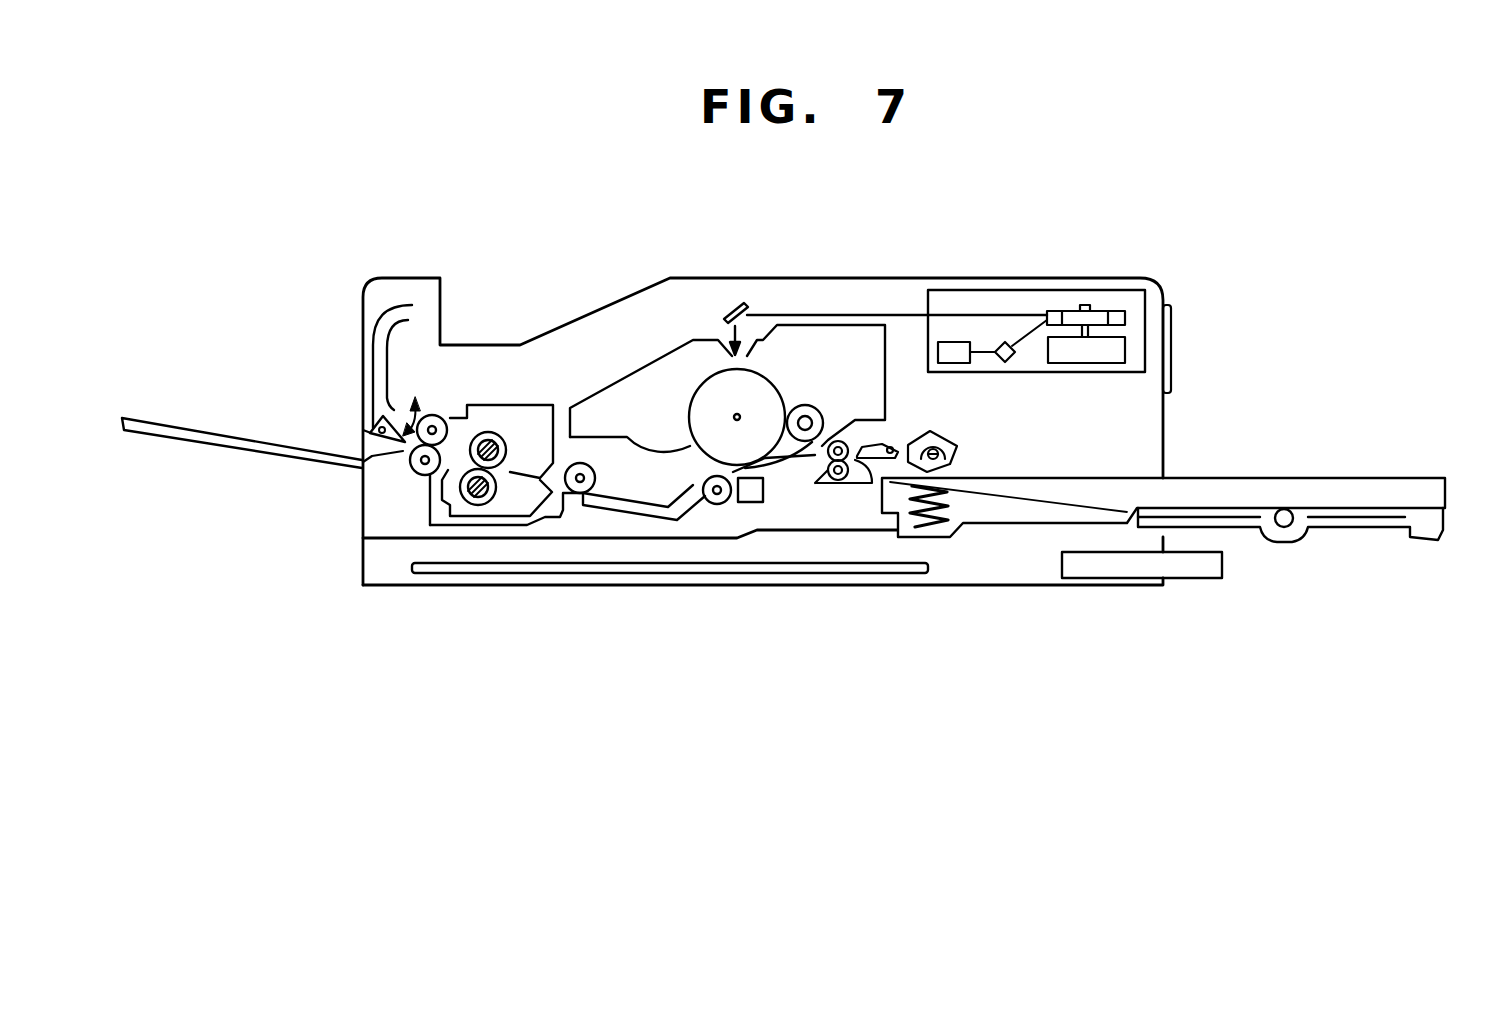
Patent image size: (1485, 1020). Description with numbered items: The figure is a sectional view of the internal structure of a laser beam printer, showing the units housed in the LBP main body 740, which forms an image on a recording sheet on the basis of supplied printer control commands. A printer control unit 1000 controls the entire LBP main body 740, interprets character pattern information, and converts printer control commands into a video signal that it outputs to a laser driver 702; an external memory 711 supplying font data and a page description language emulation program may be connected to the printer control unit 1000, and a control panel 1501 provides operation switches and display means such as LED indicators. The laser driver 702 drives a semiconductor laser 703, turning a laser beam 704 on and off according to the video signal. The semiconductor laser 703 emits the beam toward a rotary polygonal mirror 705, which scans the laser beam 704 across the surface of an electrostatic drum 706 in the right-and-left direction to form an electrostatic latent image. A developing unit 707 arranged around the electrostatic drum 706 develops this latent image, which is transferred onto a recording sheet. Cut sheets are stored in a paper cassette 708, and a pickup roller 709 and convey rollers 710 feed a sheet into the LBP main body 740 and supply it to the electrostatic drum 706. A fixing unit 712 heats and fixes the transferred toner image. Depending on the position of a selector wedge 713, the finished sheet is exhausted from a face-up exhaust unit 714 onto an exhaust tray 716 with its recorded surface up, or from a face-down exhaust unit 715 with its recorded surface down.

The laser driver 702 is at (957, 365).
The semiconductor laser 703 is at (1013, 357).
The laser beam 704 is at (1007, 315).
The rotary polygonal mirror 705 is at (1130, 318).
The electrostatic drum 706 is at (690, 398).
The developing unit 707 is at (602, 408).
The paper cassette 708 is at (1270, 478).
The pickup roller 709 is at (958, 452).
The convey rollers 710 is at (837, 482).
The external memory 711 is at (1210, 580).
The fixing unit 712 is at (492, 417).
The selector wedge 713 is at (372, 431).
The face-up exhaust unit 714 is at (360, 463).
The face-down exhaust unit 715 is at (438, 313).
The exhaust tray 716 is at (202, 432).
The LBP main body 740 is at (1122, 289).
The printer control unit 1000 is at (500, 575).
The control panel 1501 is at (1172, 358).